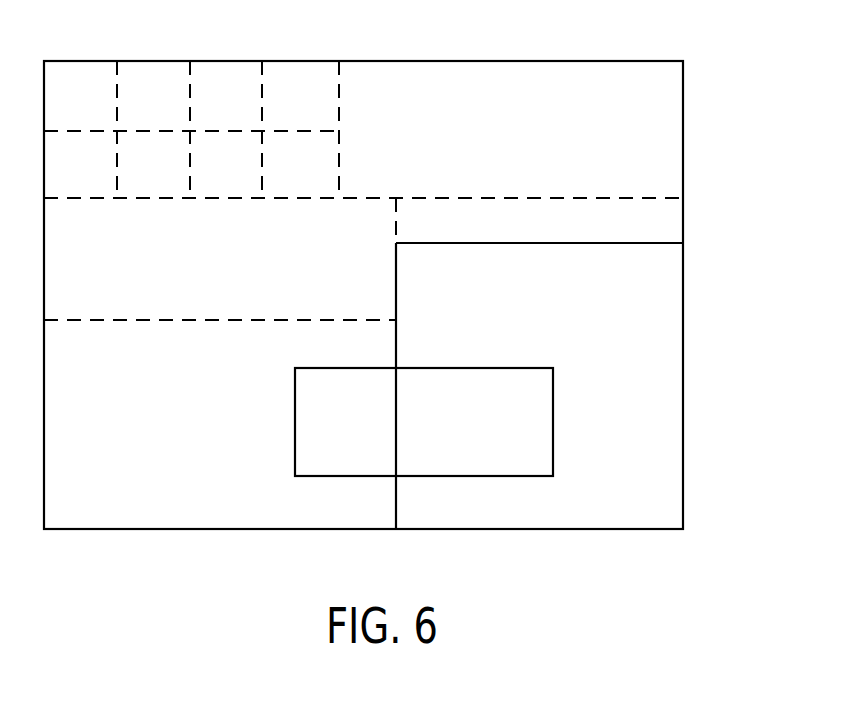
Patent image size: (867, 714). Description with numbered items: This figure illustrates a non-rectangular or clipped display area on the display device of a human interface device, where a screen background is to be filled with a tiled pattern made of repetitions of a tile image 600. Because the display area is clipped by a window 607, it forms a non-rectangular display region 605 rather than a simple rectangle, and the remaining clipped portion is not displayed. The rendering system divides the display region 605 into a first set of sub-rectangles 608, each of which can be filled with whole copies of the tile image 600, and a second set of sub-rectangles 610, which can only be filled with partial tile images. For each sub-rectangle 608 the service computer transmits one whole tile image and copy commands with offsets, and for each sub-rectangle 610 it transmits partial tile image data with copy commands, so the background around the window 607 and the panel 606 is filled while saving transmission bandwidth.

The tile image 600 is at (248, 110).
The non-rectangular display region 605 is at (648, 82).
The panel 606 is at (683, 417).
The window 607 is at (657, 317).
The first set of sub-rectangles 608 is at (507, 146).
The second set of sub-rectangles 610 is at (562, 235).